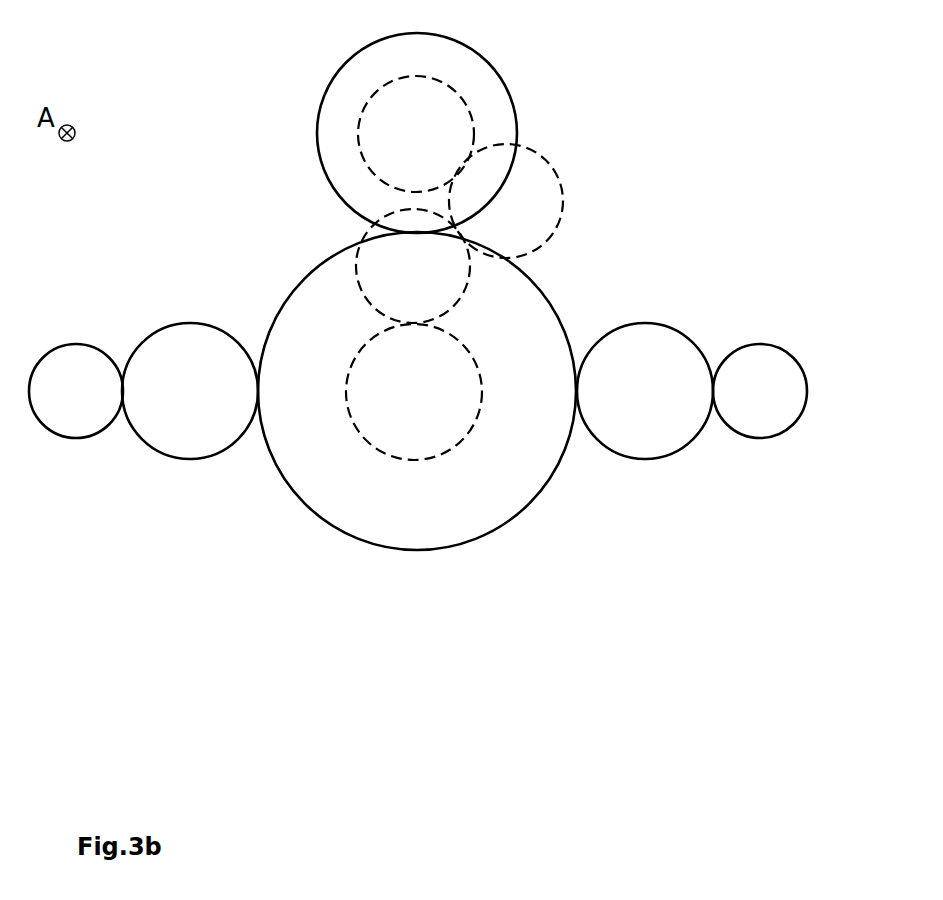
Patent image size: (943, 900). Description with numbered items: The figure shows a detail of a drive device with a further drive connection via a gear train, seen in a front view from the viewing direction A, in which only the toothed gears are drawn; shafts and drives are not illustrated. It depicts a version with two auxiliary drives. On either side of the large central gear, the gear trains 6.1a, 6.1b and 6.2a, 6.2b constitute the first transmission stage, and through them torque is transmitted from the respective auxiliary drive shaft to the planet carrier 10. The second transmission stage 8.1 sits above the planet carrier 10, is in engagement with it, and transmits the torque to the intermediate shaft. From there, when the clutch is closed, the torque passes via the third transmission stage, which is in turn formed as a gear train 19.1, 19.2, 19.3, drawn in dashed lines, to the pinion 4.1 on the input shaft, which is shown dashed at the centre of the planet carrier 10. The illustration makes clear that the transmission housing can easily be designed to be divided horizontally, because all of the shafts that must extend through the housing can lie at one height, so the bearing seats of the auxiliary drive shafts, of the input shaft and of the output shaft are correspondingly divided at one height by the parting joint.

The planet carrier 10 is at (333, 530).
The pinion 4.1 is at (447, 453).
The second transmission stage 8.1 is at (325, 84).
The gear train of the third transmission stage 19.1 is at (473, 115).
The gear train of the third transmission stage 19.2 is at (560, 222).
The gear train of the third transmission stage 19.3 is at (355, 268).
The gear train of the first transmission stage 6.1a is at (755, 440).
The gear train of the first transmission stage 6.1b is at (655, 463).
The gear train of the first transmission stage 6.2a is at (79, 440).
The gear train of the first transmission stage 6.2b is at (200, 463).